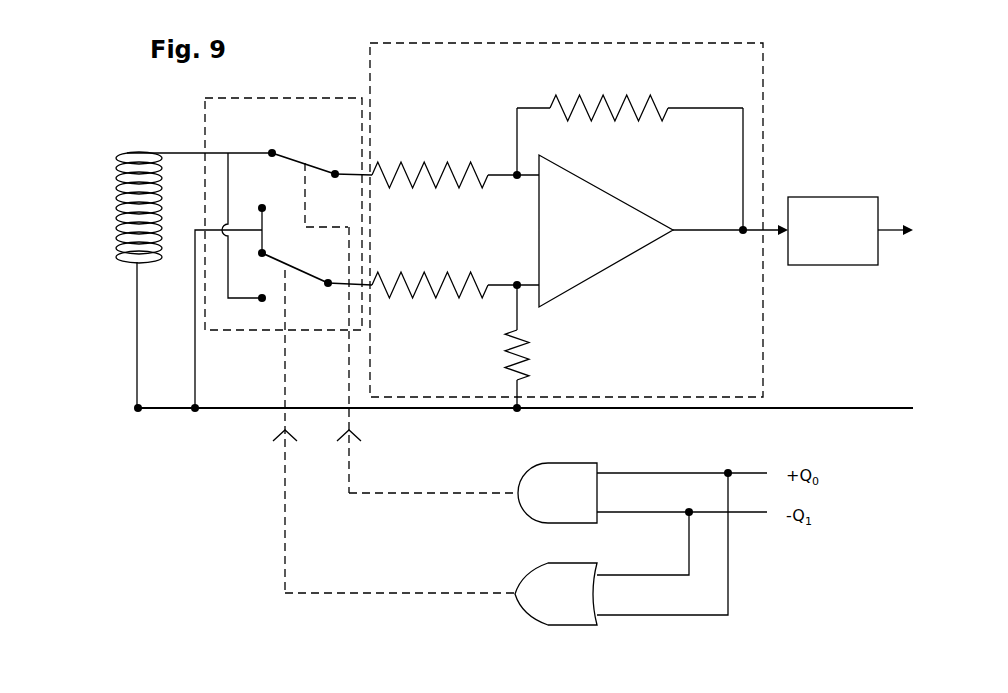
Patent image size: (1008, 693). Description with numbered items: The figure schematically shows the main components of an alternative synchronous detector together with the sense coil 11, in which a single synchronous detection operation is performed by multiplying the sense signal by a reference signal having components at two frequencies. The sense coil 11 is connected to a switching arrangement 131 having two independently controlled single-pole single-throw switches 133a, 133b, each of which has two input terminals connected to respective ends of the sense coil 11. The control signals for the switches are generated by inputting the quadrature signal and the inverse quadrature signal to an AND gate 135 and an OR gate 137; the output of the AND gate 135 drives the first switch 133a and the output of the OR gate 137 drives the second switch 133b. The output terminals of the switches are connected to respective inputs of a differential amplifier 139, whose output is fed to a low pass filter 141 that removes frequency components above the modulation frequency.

The sense coil 11 is at (104, 186).
The switching arrangement 131 is at (267, 98).
The first switch 133a is at (308, 152).
The second switch 133b is at (294, 283).
The AND gate 135 is at (558, 462).
The OR gate 137 is at (560, 628).
The differential amplifier 139 is at (565, 42).
The low pass filter 141 is at (835, 265).